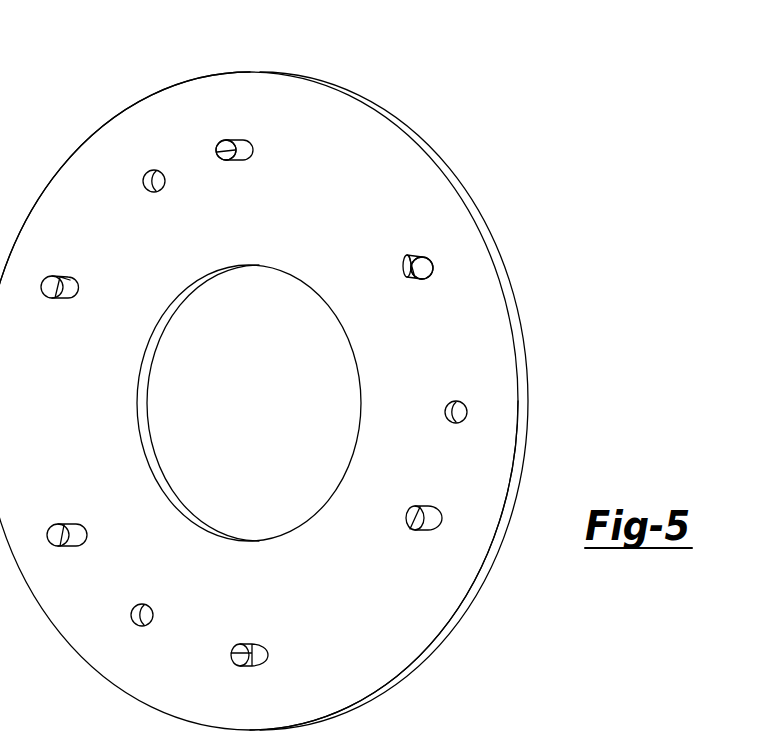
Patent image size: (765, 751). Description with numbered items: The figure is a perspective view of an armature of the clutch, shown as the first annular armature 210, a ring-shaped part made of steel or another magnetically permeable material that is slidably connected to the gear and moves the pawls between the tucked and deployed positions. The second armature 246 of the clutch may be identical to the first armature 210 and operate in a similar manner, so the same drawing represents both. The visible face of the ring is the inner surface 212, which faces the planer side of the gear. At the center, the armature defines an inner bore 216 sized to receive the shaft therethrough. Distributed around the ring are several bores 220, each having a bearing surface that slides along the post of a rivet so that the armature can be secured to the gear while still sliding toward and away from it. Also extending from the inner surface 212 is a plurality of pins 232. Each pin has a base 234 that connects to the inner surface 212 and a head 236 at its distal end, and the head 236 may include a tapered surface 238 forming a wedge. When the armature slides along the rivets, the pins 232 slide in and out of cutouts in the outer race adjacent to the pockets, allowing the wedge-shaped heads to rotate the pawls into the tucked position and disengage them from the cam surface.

The first annular armature 210 is at (198, 63).
The second armature 246 is at (125, 211).
The inner surface 212 is at (327, 199).
The inner bore 216 is at (168, 312).
The bores 220 is at (445, 412).
The pins 232 is at (420, 263).
The base 234 is at (433, 266).
The head 236 is at (225, 140).
The tapered surface 238 is at (228, 161).